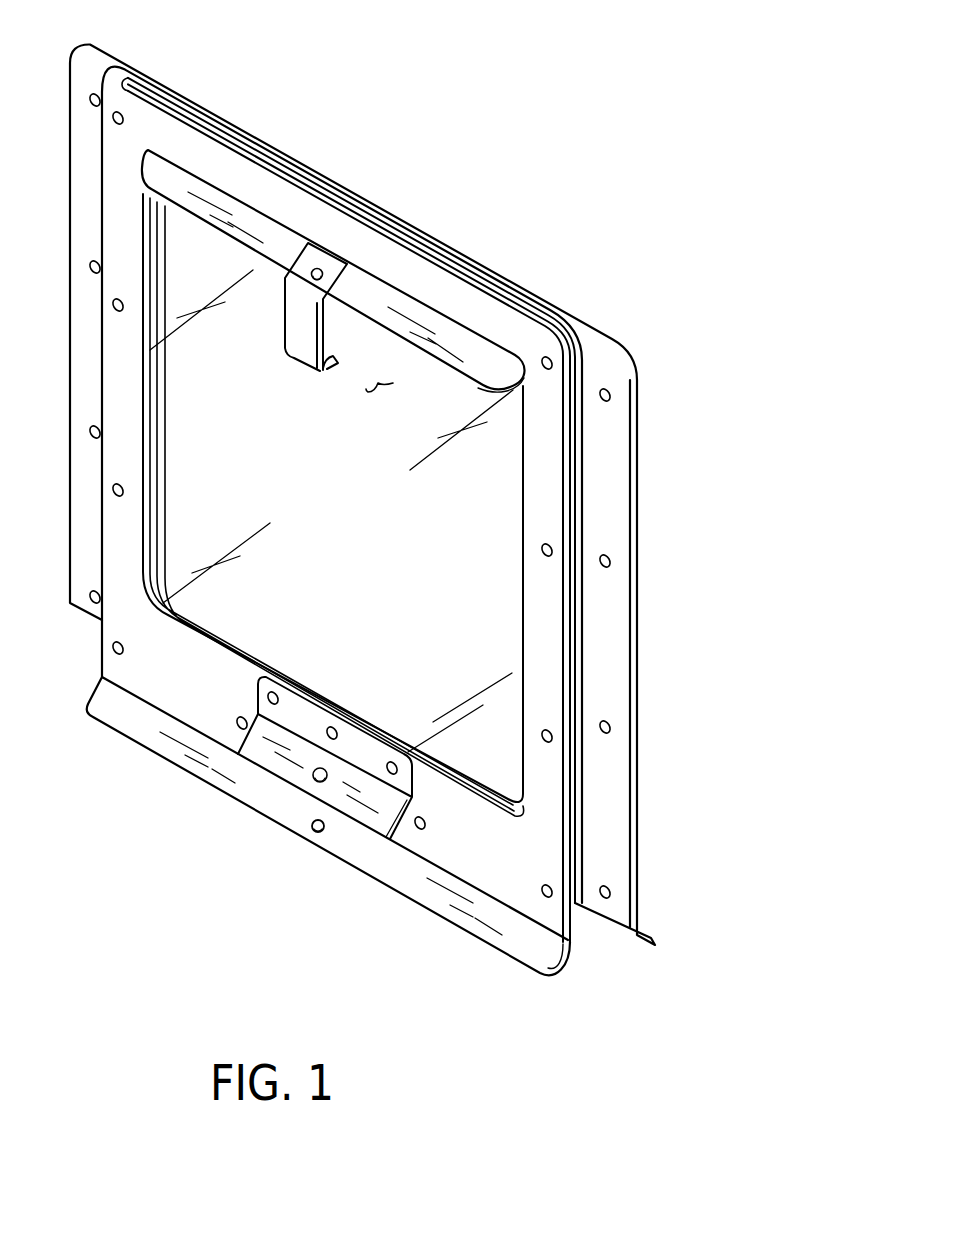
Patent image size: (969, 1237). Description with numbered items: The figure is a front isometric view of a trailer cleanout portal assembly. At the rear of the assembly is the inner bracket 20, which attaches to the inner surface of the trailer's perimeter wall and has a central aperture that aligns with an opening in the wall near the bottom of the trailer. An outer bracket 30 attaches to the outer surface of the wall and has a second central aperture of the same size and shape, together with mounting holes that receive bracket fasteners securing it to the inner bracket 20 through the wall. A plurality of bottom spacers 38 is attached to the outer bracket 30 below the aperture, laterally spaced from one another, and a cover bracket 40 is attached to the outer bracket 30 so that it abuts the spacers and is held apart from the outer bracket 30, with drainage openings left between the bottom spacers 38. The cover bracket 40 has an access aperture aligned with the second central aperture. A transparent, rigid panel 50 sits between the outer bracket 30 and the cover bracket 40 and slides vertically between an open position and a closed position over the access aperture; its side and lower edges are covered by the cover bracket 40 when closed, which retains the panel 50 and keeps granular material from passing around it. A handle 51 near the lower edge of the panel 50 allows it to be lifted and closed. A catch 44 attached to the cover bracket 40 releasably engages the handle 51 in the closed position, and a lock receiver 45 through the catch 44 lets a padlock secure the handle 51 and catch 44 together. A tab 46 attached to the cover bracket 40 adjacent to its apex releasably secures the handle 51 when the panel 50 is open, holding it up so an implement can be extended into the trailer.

The inner bracket 20 is at (630, 378).
The outer bracket 30 is at (577, 355).
The bottom spacers 38 is at (553, 330).
The cover bracket 40 is at (467, 303).
The catch 44 is at (390, 871).
The lock receiver 45 is at (315, 830).
The tab 46 is at (306, 293).
The panel 50 is at (378, 383).
The handle 51 is at (262, 750).